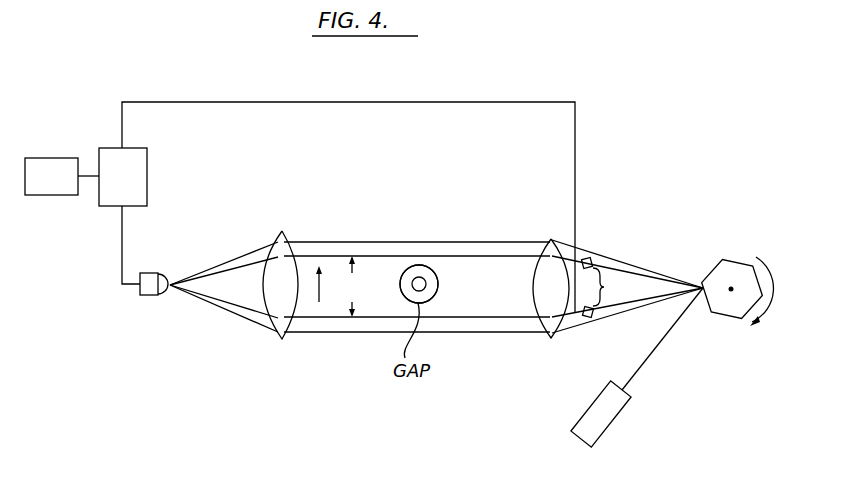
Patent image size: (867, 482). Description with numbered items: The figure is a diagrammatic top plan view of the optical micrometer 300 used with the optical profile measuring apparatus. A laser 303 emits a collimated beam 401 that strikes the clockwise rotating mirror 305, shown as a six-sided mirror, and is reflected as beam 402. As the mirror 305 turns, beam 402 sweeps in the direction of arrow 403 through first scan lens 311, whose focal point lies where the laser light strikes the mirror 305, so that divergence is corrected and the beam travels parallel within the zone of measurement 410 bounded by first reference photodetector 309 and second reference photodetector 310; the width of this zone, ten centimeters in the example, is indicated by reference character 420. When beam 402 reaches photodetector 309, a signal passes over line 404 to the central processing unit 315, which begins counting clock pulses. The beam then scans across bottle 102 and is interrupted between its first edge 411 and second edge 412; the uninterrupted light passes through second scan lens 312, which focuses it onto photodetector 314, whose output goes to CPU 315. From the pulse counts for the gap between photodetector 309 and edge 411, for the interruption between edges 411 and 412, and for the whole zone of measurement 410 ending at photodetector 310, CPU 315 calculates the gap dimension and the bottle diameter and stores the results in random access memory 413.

The optical micrometer 300 is at (665, 131).
The line 404 is at (340, 101).
The central processing unit 315 is at (112, 148).
The random access memory 413 is at (45, 196).
The photodetector 314 is at (153, 273).
The second scan lens 312 is at (283, 233).
The arrow 403 is at (318, 303).
The zone of measurement distance 420 is at (352, 286).
The second edge 412 is at (421, 264).
The bottle 102 is at (438, 287).
The first edge 411 is at (430, 300).
The first scan lens 311 is at (551, 239).
The second reference photodetector 310 is at (590, 258).
The first reference photodetector 309 is at (585, 320).
The zone of measurement 410 is at (618, 287).
The beam 402 is at (640, 308).
The rotating mirror 305 is at (733, 257).
The beam 401 is at (667, 348).
The laser 303 is at (610, 428).